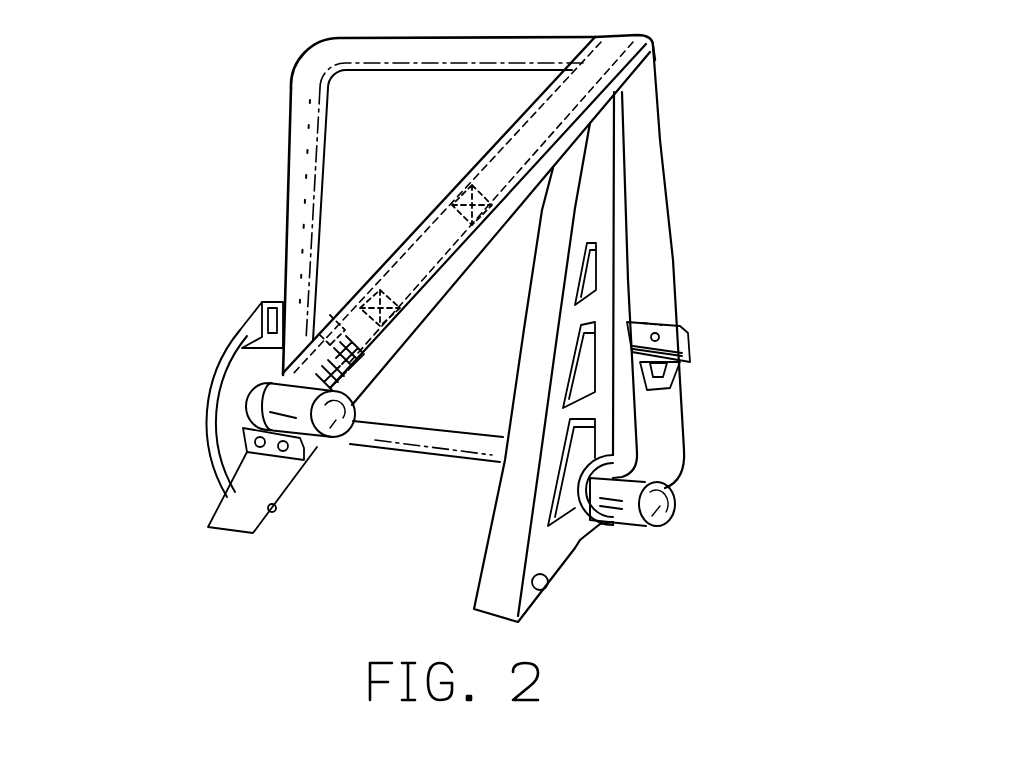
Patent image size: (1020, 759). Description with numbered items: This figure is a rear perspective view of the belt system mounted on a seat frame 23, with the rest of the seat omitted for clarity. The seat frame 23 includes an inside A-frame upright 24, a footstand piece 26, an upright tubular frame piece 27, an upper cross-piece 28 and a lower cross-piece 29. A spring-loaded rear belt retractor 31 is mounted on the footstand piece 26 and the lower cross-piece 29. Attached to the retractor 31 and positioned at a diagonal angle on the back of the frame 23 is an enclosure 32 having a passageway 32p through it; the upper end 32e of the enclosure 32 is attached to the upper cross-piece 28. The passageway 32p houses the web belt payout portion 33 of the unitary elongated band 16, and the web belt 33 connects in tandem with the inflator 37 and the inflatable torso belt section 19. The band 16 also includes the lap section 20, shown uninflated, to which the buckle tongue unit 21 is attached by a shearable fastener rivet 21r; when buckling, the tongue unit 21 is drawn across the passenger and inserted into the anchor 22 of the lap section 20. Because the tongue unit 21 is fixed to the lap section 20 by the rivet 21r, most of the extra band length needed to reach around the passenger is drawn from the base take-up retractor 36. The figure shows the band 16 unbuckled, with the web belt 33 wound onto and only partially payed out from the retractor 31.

The unitary elongated band 16 is at (687, 218).
The inflatable torso belt section 19 is at (642, 145).
The lap section 20 is at (658, 455).
The buckle tongue unit 21 is at (690, 362).
The shearable fastener rivet 21r is at (660, 335).
The anchor 22 is at (273, 307).
The seat frame 23 is at (262, 222).
The inside A-frame upright 24 is at (560, 577).
The footstand piece 26 is at (282, 497).
The upright tubular frame piece 27 is at (292, 134).
The upper cross-piece 28 is at (368, 46).
The lower cross-piece 29 is at (492, 454).
The rear belt retractor 31 is at (338, 440).
The enclosure 32 is at (522, 124).
The upper end of enclosure 32e is at (610, 50).
The passageway 32p is at (403, 340).
The web belt payout portion 33 is at (300, 377).
The base take-up retractor 36 is at (658, 508).
The inflator 37 is at (418, 258).